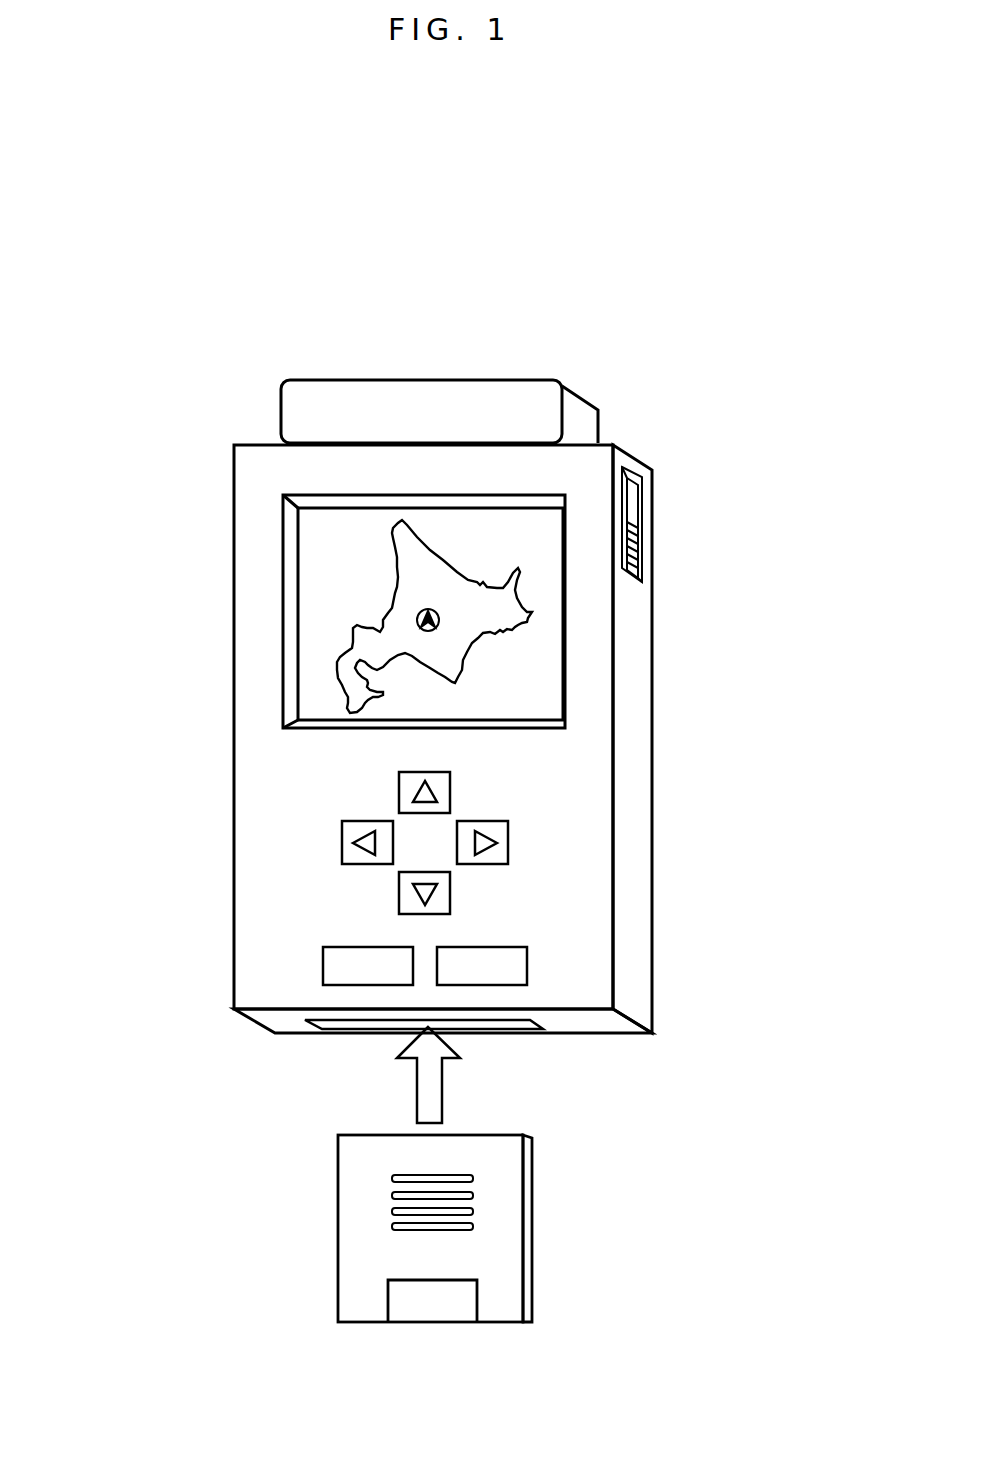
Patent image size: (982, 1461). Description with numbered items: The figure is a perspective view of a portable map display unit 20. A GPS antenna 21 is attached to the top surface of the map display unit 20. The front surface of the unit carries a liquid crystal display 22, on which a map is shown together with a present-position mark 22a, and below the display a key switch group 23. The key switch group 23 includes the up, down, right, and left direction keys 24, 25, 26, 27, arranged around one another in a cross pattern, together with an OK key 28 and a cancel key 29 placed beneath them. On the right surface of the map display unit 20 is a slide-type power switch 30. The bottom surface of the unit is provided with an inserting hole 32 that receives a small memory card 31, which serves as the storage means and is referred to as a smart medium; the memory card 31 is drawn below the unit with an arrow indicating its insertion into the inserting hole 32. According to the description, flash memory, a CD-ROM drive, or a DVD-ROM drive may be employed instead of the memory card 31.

The portable map display unit 20 is at (649, 345).
The GPS antenna 21 is at (422, 380).
The liquid crystal display 22 is at (342, 595).
The present-position mark 22a is at (441, 617).
The key switch group 23 is at (758, 731).
The up direction key 24 is at (450, 789).
The down direction key 25 is at (393, 837).
The right direction key 26 is at (508, 845).
The left direction key 27 is at (450, 897).
The OK key 28 is at (367, 947).
The cancel key 29 is at (527, 977).
The slide-type power switch 30 is at (633, 550).
The memory card 31 is at (532, 1227).
The inserting hole 32 is at (528, 1024).